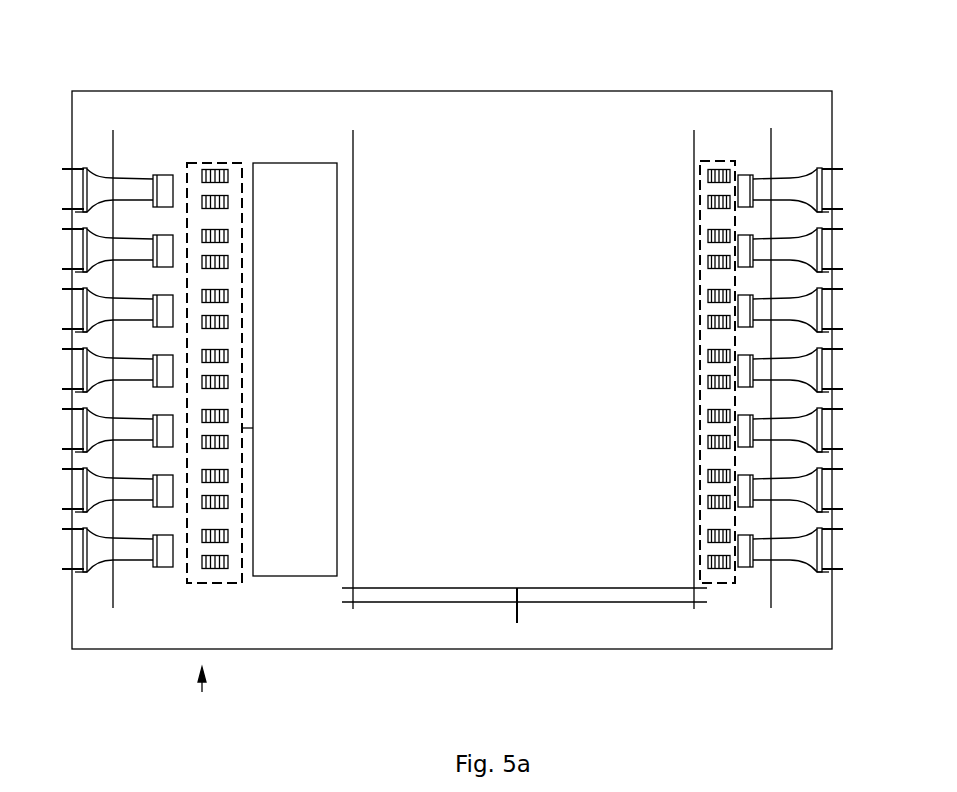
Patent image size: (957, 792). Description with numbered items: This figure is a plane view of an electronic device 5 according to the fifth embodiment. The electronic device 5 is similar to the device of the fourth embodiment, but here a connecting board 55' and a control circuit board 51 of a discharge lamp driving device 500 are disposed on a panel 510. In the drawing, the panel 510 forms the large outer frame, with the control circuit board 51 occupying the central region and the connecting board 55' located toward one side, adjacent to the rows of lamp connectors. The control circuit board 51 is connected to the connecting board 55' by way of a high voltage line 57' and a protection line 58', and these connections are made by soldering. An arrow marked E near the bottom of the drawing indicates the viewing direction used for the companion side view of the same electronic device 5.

The electronic device 5 is at (378, 59).
The panel 510 is at (460, 91).
The control circuit board 51 is at (333, 609).
The high voltage line 57' is at (507, 639).
The protection line 58' is at (524, 639).
The connecting board 55' is at (711, 426).
The discharge lamp driving device 500 is at (720, 690).